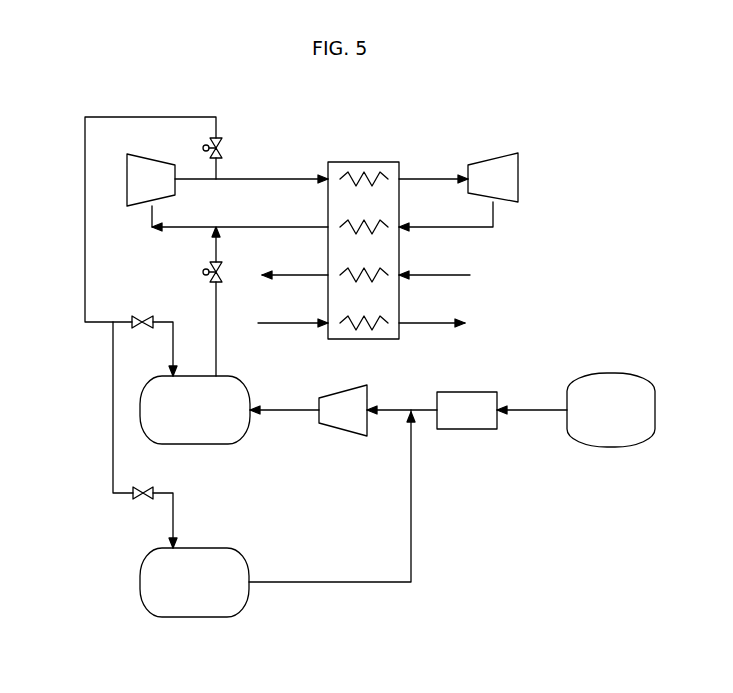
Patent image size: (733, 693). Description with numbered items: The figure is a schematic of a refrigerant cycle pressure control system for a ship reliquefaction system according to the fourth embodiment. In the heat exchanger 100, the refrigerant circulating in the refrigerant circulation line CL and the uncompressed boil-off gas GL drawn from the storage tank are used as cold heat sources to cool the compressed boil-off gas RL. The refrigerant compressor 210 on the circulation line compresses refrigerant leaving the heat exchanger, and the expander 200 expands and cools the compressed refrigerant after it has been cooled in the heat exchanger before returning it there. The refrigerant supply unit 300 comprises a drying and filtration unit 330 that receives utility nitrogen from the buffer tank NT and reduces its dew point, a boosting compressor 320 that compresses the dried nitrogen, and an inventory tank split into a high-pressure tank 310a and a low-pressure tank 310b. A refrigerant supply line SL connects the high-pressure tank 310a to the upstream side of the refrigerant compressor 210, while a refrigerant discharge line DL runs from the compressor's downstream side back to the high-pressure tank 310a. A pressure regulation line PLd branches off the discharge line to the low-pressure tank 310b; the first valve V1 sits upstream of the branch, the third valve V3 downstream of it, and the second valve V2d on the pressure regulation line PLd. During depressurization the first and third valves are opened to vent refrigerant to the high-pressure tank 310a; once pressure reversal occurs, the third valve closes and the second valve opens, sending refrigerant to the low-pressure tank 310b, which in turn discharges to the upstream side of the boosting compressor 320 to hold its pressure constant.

The heat exchanger 100 is at (363, 162).
The expander 200 is at (493, 158).
The refrigerant compressor 210 is at (127, 206).
The refrigerant supply unit 300 is at (350, 503).
The high-pressure tank 310a is at (195, 444).
The low-pressure tank 310b is at (195, 617).
The boosting compressor 320 is at (340, 436).
The drying and filtration unit 330 is at (467, 429).
The buffer tank NT is at (610, 447).
The refrigerant discharge line DL is at (148, 117).
The refrigerant circulation line CL is at (493, 227).
The uncompressed boil-off gas GL is at (440, 275).
The refrigerant supply line SL is at (217, 298).
The compressed boil-off gas RL is at (285, 325).
The pressure regulation line PLd is at (113, 410).
The first valve V1 is at (222, 148).
The second valve V2d is at (143, 488).
The third valve V3 is at (143, 316).